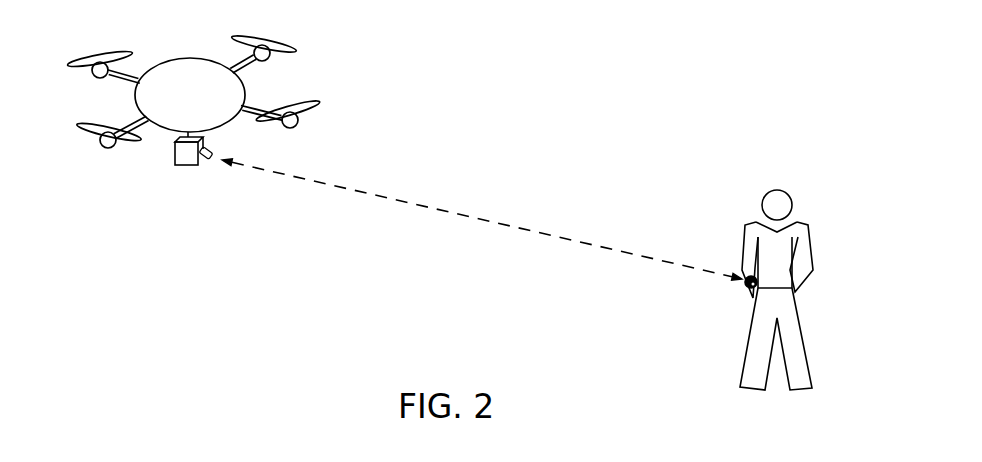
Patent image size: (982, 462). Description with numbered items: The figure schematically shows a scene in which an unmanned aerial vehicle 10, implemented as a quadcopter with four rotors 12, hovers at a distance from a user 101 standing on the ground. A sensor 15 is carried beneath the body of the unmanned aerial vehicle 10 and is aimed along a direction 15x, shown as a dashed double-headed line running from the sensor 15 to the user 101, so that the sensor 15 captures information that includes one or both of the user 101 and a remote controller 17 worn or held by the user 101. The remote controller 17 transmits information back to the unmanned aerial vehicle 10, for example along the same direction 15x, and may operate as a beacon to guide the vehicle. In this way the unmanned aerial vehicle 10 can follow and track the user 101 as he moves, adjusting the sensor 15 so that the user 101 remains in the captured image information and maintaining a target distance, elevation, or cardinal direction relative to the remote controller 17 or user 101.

The unmanned aerial vehicle 10 is at (206, 119).
The rotor 12 is at (307, 113).
The sensor 15 is at (188, 166).
The direction 15x is at (482, 219).
The remote controller 17 is at (745, 284).
The user 101 is at (744, 287).